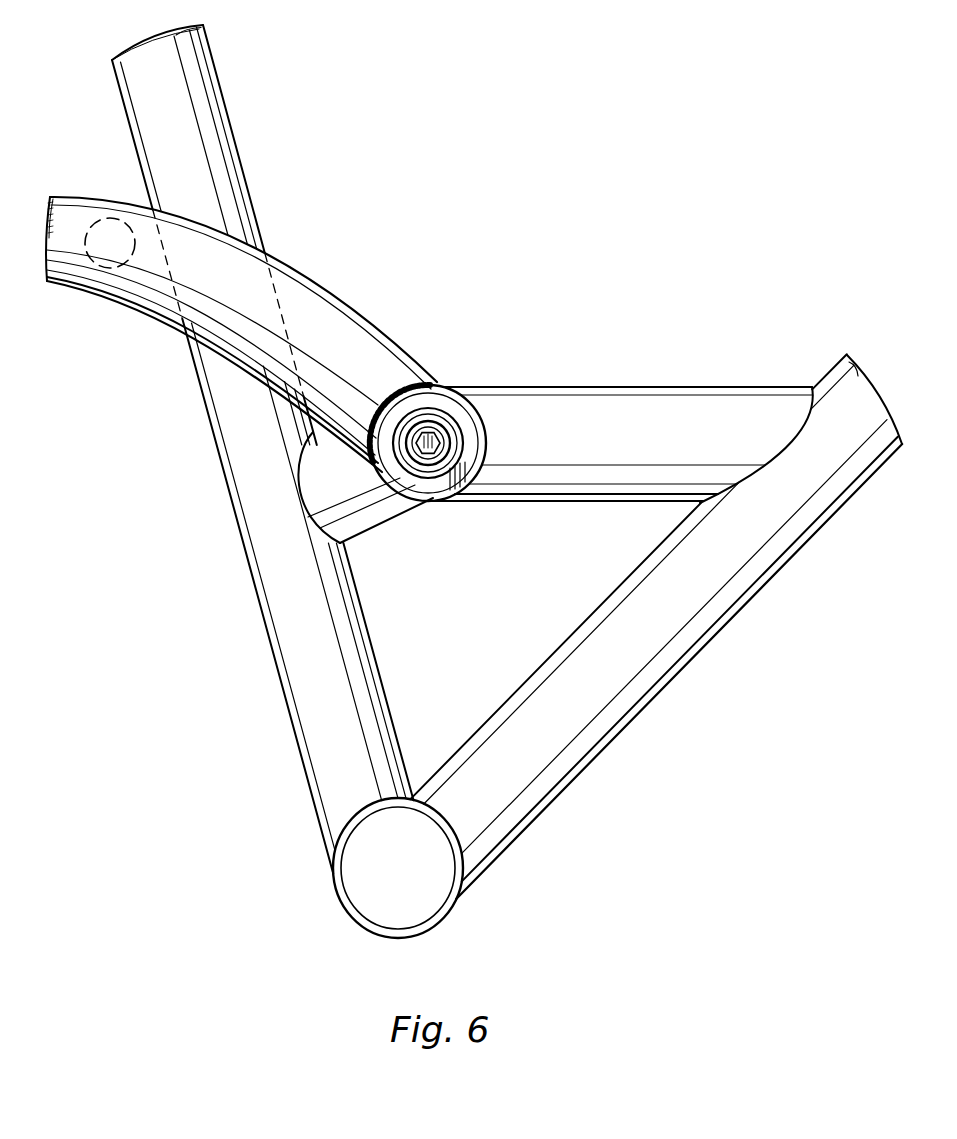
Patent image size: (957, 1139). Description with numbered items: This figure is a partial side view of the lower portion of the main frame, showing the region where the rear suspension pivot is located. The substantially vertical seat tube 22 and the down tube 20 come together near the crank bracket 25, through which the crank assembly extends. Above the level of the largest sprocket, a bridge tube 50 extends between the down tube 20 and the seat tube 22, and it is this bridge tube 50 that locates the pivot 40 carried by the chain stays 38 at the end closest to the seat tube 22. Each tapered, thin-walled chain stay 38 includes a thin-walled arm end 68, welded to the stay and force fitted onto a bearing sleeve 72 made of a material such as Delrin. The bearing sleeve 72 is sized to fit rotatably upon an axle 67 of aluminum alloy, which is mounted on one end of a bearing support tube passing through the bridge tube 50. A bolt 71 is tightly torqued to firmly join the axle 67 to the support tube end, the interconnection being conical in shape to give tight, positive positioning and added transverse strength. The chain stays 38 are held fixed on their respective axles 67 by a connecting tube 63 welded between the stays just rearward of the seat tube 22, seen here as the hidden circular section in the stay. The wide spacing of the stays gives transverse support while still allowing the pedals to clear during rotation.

The down tube 20 is at (692, 632).
The seat tube 22 is at (268, 612).
The crank bracket 25 is at (342, 905).
The chain stays 38 is at (332, 303).
The pivot 40 is at (436, 503).
The bridge tube 50 is at (705, 395).
The connecting tube 63 is at (113, 268).
The axle 67 is at (462, 437).
The arm end 68 is at (485, 448).
The bolt 71 is at (428, 432).
The bearing sleeve 72 is at (448, 420).